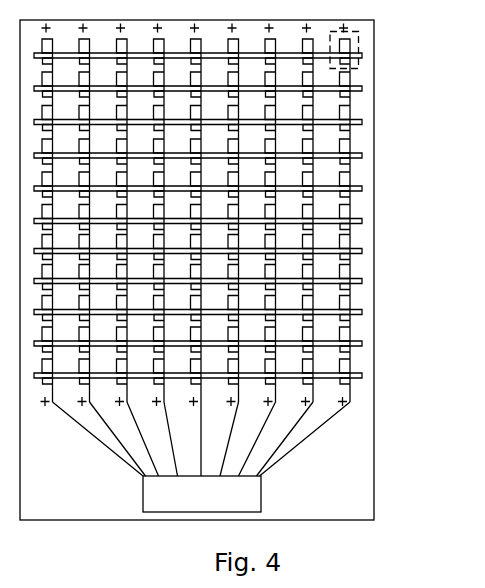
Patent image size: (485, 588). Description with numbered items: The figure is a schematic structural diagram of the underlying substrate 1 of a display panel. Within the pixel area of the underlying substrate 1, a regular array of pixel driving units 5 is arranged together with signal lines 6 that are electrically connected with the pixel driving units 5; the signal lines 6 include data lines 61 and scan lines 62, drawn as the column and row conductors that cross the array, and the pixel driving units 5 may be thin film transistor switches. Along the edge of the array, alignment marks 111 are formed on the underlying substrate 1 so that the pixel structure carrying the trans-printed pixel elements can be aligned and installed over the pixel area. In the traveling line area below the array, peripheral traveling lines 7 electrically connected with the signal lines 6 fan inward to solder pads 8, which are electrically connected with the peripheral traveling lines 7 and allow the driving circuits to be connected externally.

The underlying substrate 1 is at (355, 484).
The pixel driving unit 5 is at (358, 44).
The signal line 6 is at (246, 220).
The data line 61 is at (350, 132).
The scan line 62 is at (362, 154).
The peripheral traveling line 7 is at (300, 443).
The solder pad 8 is at (248, 495).
The alignment mark 111 is at (345, 398).